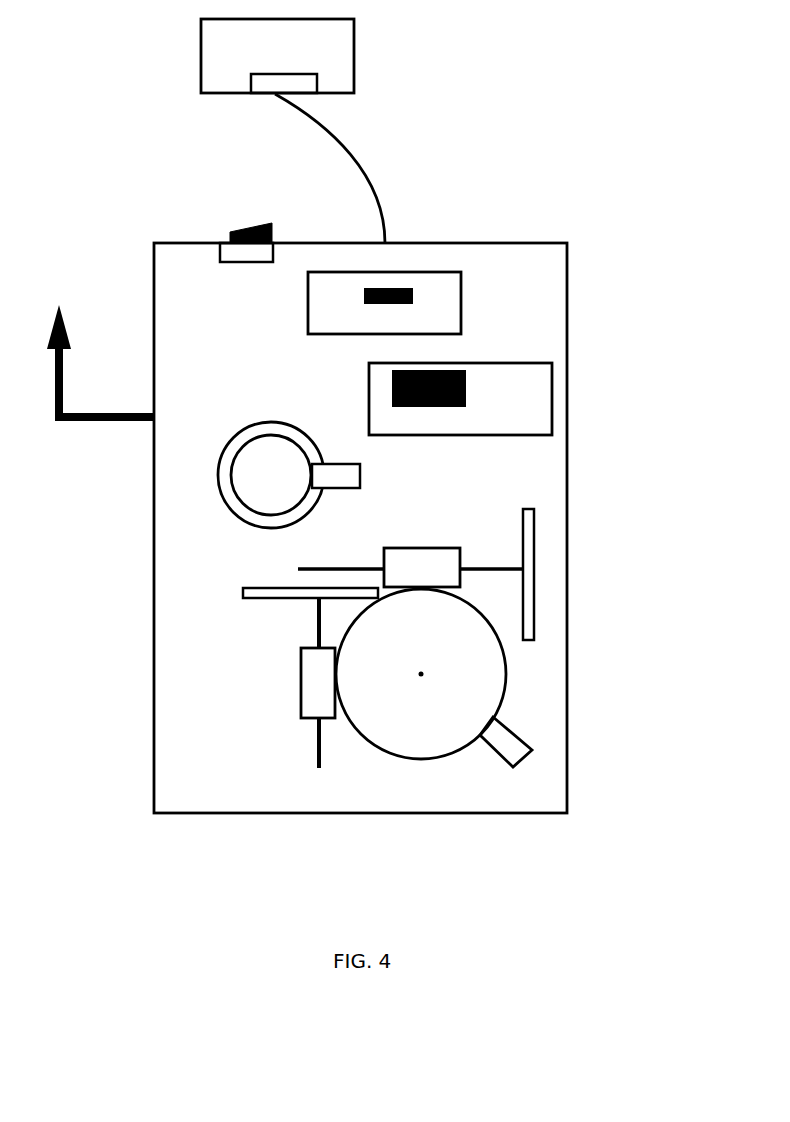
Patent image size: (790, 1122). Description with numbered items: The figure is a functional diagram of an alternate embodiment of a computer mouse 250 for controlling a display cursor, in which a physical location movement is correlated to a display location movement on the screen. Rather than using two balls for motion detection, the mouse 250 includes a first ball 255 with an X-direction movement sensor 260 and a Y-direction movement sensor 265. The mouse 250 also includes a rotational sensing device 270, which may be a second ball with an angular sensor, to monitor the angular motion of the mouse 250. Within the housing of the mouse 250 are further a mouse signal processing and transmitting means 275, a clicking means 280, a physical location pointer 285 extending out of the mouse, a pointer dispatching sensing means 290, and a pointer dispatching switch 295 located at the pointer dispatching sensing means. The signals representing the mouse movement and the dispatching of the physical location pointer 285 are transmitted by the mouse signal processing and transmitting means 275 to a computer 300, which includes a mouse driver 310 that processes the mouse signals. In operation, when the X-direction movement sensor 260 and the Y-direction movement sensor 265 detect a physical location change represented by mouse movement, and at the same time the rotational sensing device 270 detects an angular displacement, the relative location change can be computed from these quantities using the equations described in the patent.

The computer mouse 250 is at (531, 120).
The first ball 255 is at (480, 696).
The X-direction movement sensor 260 is at (430, 527).
The Y-direction movement sensor 265 is at (267, 665).
The rotational sensing device 270 is at (260, 407).
The mouse signal processing and transmitting means 275 is at (535, 393).
The clicking means 280 is at (445, 297).
The physical location pointer 285 is at (58, 307).
The pointer dispatching sensing means 290 is at (250, 255).
The pointer dispatching switch 295 is at (263, 200).
The computer 300 is at (293, 131).
The mouse driver 310 is at (270, 88).